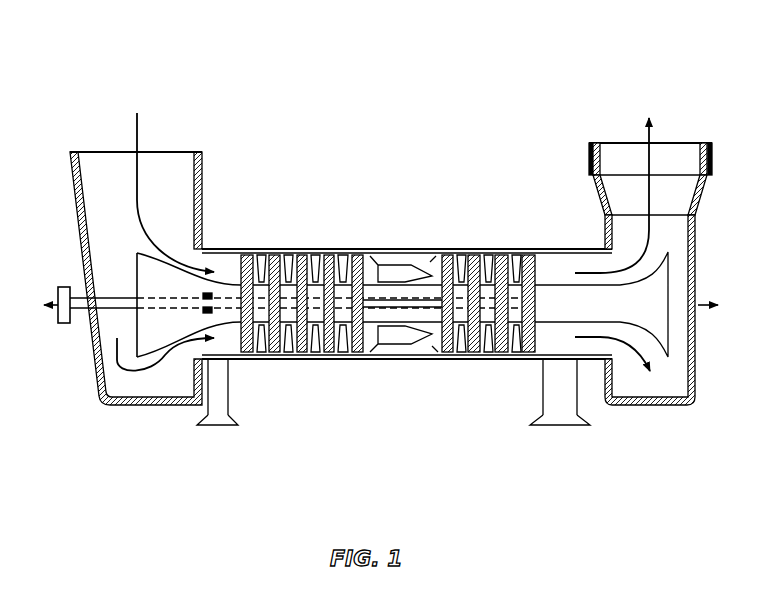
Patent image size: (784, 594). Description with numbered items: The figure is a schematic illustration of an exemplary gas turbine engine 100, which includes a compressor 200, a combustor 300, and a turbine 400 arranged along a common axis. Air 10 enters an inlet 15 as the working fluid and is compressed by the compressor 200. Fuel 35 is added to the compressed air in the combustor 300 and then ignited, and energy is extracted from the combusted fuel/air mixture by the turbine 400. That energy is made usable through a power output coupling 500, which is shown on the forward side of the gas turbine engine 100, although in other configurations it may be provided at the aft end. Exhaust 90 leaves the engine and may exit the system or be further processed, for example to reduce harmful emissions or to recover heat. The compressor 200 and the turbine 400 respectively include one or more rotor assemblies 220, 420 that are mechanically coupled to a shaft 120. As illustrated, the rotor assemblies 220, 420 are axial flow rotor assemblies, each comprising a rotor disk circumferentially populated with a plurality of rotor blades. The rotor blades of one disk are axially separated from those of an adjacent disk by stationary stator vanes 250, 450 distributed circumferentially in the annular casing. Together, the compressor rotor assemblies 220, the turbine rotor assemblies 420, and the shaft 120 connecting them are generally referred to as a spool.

The gas turbine engine 100 is at (85, 40).
The air 10 is at (137, 135).
The inlet 15 is at (214, 176).
The power output coupling 500 is at (60, 288).
The compressor 200 is at (316, 286).
The rotor assemblies 220 is at (273, 253).
The stator vanes 250 is at (283, 359).
The combustor 300 is at (403, 286).
The shaft 120 is at (393, 300).
The fuel 35 is at (402, 341).
The turbine 400 is at (485, 286).
The rotor assemblies 420 is at (535, 207).
The stator vanes 450 is at (458, 359).
The exhaust 90 is at (647, 124).